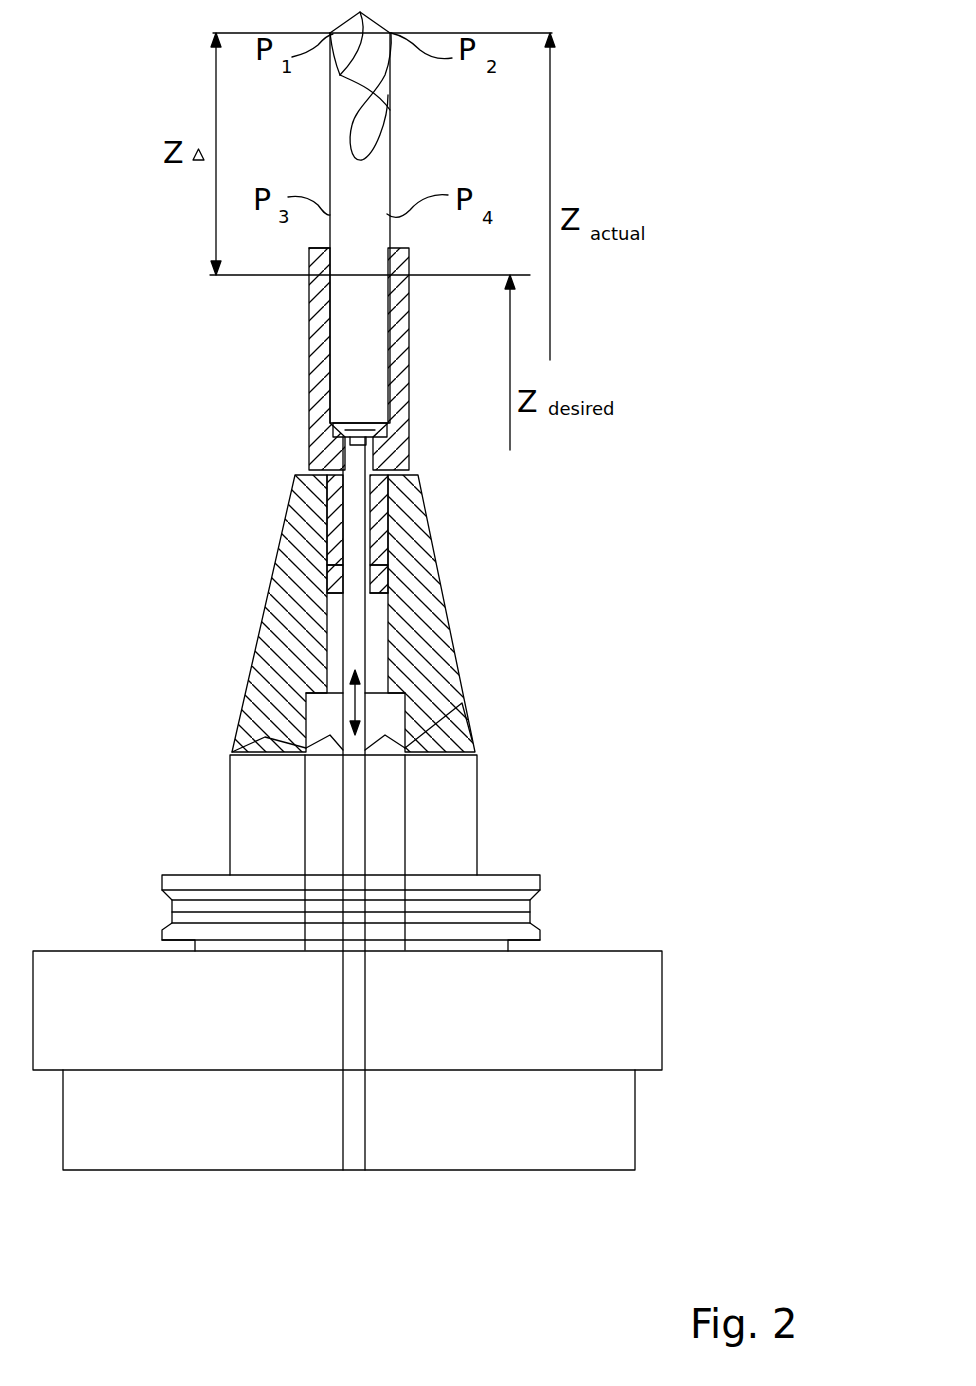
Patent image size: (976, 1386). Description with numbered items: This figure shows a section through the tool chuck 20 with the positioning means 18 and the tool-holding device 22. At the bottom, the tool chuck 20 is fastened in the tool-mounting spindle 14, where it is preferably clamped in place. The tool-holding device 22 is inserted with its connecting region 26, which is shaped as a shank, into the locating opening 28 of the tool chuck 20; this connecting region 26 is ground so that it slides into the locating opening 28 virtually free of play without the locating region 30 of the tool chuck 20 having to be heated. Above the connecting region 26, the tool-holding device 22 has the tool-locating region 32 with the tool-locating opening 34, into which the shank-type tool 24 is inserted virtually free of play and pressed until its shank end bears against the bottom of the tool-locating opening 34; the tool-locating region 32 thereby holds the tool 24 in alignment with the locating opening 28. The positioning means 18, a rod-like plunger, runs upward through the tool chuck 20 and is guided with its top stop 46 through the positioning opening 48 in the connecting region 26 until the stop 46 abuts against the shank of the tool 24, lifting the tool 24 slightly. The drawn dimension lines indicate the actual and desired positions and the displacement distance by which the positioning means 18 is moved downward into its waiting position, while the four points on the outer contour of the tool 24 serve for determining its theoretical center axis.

The tool-mounting spindle 14 is at (600, 997).
The positioning means 18 is at (362, 497).
The tool chuck 20 is at (450, 835).
The tool-holding device 22 is at (268, 350).
The tool 24 is at (395, 216).
The connecting region 26 is at (333, 520).
The locating opening 28 is at (378, 645).
The locating region 30 is at (280, 630).
The tool-locating region 32 is at (312, 372).
The tool-locating opening 34 is at (312, 239).
The stop 46 is at (333, 452).
The positioning opening 48 is at (378, 565).